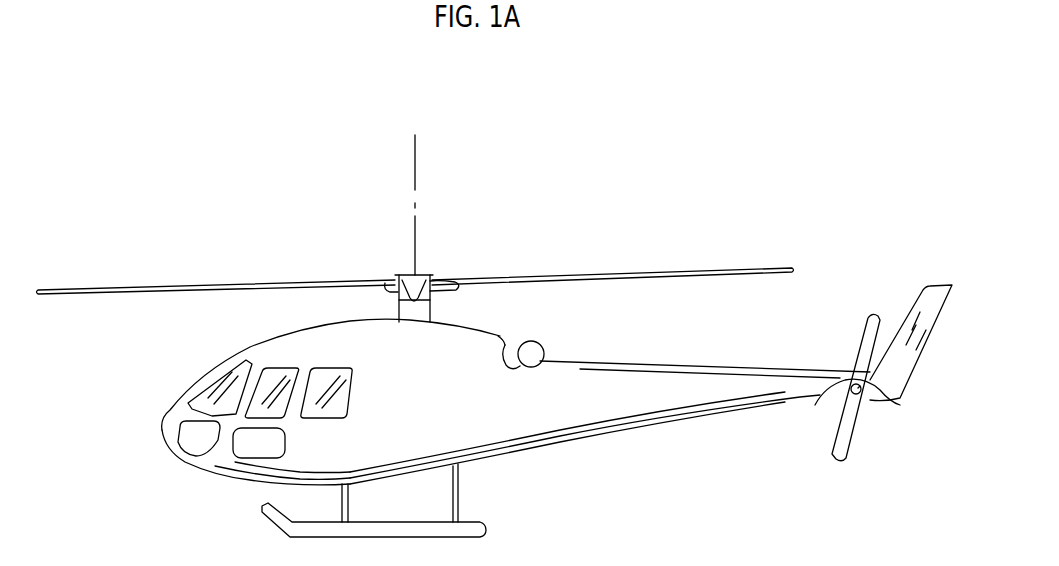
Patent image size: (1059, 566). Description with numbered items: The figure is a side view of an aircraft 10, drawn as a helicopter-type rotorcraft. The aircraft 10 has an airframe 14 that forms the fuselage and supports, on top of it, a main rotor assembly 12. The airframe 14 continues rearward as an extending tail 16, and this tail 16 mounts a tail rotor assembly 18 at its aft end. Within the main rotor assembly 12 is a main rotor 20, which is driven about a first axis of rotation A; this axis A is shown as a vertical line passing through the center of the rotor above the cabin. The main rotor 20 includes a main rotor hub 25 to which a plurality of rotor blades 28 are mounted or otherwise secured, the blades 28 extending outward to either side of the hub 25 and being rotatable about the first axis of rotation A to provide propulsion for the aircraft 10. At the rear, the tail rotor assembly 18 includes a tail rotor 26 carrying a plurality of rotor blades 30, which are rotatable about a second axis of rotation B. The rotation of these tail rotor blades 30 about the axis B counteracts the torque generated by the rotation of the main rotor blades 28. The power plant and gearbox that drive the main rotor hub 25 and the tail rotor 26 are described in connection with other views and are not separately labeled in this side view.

The aircraft 10 is at (130, 152).
The main rotor assembly 12 is at (350, 240).
The airframe 14 is at (250, 470).
The extending tail 16 is at (662, 418).
The tail rotor assembly 18 is at (885, 286).
The main rotor 20 is at (434, 278).
The main rotor hub 25 is at (432, 304).
The tail rotor 26 is at (820, 398).
The rotor blades 28 is at (128, 287).
The rotor blades 30 is at (850, 322).
The first axis of rotation A is at (418, 170).
The second axis of rotation B is at (900, 405).